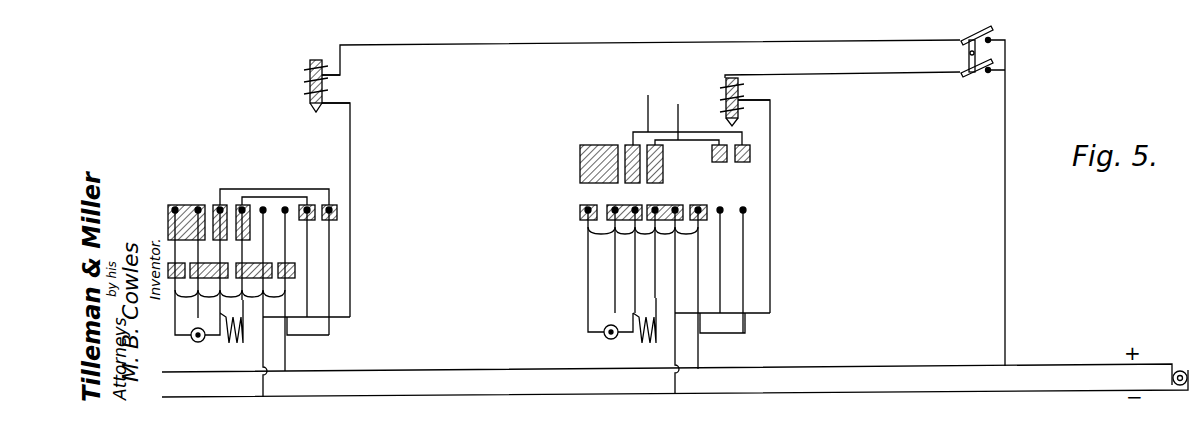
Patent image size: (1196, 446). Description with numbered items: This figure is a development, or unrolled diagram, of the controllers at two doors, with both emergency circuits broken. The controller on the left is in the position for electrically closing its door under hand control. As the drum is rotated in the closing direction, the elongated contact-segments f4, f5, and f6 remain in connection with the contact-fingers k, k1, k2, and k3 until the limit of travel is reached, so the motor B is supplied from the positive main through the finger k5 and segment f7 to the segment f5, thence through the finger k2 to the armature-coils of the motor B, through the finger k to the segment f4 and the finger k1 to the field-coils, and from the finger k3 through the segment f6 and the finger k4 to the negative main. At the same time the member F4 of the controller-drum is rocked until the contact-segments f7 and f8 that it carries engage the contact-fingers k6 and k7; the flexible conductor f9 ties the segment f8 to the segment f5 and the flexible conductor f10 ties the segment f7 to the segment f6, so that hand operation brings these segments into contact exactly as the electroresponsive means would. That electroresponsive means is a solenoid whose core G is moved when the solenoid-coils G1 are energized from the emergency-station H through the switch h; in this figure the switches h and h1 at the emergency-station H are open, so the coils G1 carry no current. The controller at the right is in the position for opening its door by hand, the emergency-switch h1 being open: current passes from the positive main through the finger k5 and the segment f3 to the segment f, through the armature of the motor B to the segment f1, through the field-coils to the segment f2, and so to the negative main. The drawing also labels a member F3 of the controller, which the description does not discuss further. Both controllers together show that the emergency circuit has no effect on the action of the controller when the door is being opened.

The contact-segment f is at (580, 213).
The contact-segment f1 is at (416, 229).
The contact-segment f2 is at (459, 229).
The contact-segment f3 is at (706, 207).
The elongated contact-segment f4 is at (172, 208).
The elongated contact-segment f5 is at (220, 205).
The elongated contact-segment f6 is at (243, 203).
The contact-segment f7 is at (312, 207).
The contact-segment f8 is at (336, 209).
The flexible conductor f9 is at (310, 189).
The flexible conductor f10 is at (297, 196).
The lower frame F3 is at (414, 253).
The member of the controller-drum F4 is at (488, 179).
The contact-finger k is at (588, 255).
The contact-finger k1 is at (615, 280).
The contact-finger k2 is at (635, 283).
The contact-finger k3 is at (243, 258).
The contact-finger k4 is at (264, 284).
The contact-finger k5 is at (287, 294).
The contact-finger k6 is at (310, 247).
The contact-finger k7 is at (330, 284).
The motor B is at (405, 345).
The solenoid-core G is at (308, 67).
The solenoid-coils G1 is at (325, 97).
The emergency-station H is at (967, 202).
The switch h is at (977, 27).
The emergency-switch h1 is at (977, 76).